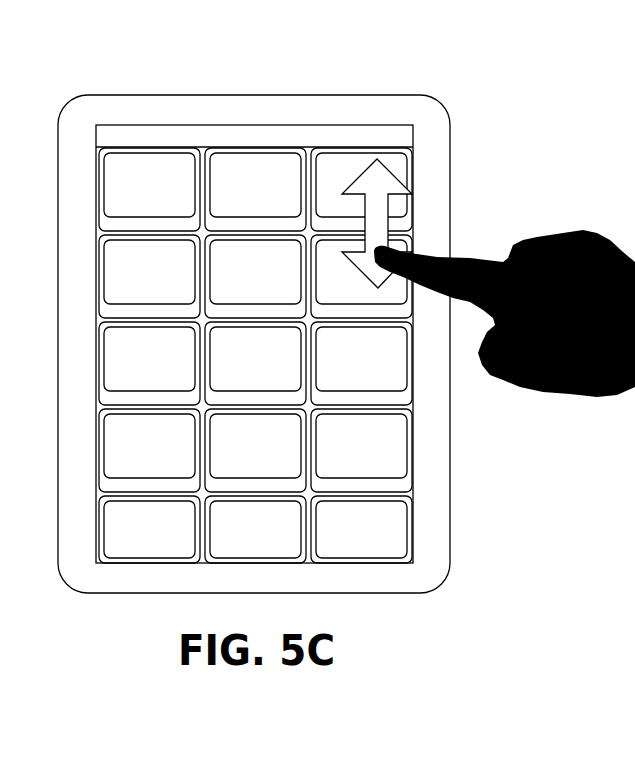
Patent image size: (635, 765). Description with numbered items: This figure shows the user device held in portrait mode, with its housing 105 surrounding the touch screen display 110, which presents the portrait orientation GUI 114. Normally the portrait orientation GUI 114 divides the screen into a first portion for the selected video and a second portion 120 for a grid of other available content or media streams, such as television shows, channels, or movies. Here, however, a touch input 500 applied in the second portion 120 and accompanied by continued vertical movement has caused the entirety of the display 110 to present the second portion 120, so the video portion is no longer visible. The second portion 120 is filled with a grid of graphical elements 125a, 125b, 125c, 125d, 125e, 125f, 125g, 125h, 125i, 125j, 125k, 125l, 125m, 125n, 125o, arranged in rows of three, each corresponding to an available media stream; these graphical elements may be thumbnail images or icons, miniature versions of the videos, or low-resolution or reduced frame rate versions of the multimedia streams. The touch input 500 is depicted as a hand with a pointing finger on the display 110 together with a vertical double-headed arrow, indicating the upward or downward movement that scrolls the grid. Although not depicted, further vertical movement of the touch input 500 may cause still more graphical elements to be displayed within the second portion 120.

The housing 105 is at (430, 508).
The touch screen display 110 is at (158, 125).
The portrait orientation GUI 114 is at (289, 118).
The second portion 120 is at (210, 355).
The graphical element 125a is at (130, 200).
The graphical element 125b is at (236, 200).
The graphical element 125c is at (323, 180).
The graphical element 125d is at (130, 287).
The graphical element 125e is at (236, 287).
The graphical element 125f is at (324, 293).
The graphical element 125g is at (130, 374).
The graphical element 125h is at (236, 374).
The graphical element 125i is at (342, 374).
The graphical element 125j is at (130, 461).
The graphical element 125k is at (236, 461).
The graphical element 125l is at (342, 461).
The graphical element 125m is at (130, 535).
The graphical element 125n is at (236, 535).
The graphical element 125o is at (342, 535).
The touch input 500 is at (386, 236).